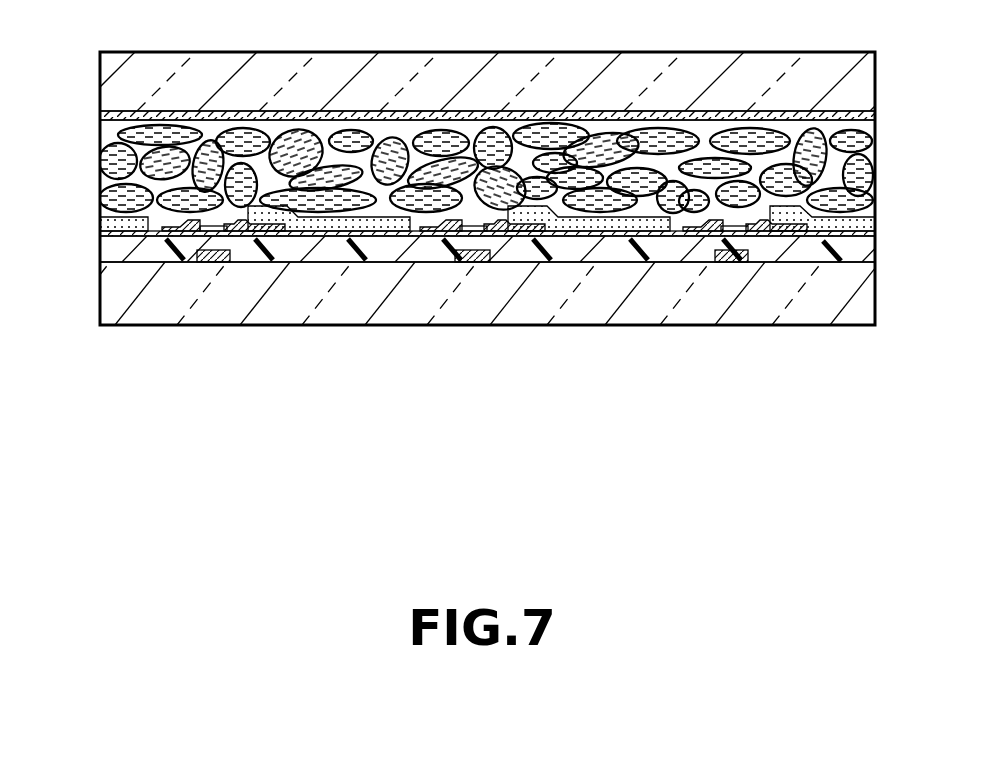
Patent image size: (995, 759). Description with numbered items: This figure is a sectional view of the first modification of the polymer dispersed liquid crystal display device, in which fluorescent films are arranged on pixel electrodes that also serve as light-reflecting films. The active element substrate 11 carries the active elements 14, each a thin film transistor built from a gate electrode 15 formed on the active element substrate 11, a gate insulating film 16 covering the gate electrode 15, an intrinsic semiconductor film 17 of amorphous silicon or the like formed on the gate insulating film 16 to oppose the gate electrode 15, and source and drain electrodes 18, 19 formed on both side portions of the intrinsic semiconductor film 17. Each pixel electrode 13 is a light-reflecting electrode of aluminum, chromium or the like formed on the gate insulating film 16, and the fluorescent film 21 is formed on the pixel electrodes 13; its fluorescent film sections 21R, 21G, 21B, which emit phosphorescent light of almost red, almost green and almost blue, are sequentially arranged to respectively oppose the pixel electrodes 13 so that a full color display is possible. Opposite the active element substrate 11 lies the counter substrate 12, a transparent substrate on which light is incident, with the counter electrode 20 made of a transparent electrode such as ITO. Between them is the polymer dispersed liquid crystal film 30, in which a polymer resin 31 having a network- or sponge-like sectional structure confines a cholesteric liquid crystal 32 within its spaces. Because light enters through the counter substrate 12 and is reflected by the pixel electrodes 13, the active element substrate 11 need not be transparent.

The active element substrate 11 is at (860, 318).
The counter substrate 12 is at (786, 78).
The pixel electrode 13 is at (380, 237).
The active element 14 is at (205, 274).
The gate electrode 15 is at (243, 237).
The gate insulating film 16 is at (323, 252).
The intrinsic semiconductor film 17 is at (170, 237).
The source electrode 18 is at (279, 237).
The drain electrode 19 is at (140, 238).
The counter electrode 20 is at (513, 112).
The fluorescent film 21 is at (487, 400).
The fluorescent film section for red 21R is at (400, 237).
The fluorescent film section for green 21G is at (572, 225).
The fluorescent film section for blue 21B is at (800, 235).
The polymer dispersed liquid crystal film 30 is at (94, 118).
The polymer resin 31 is at (213, 125).
The cholesteric liquid crystal 32 is at (300, 145).